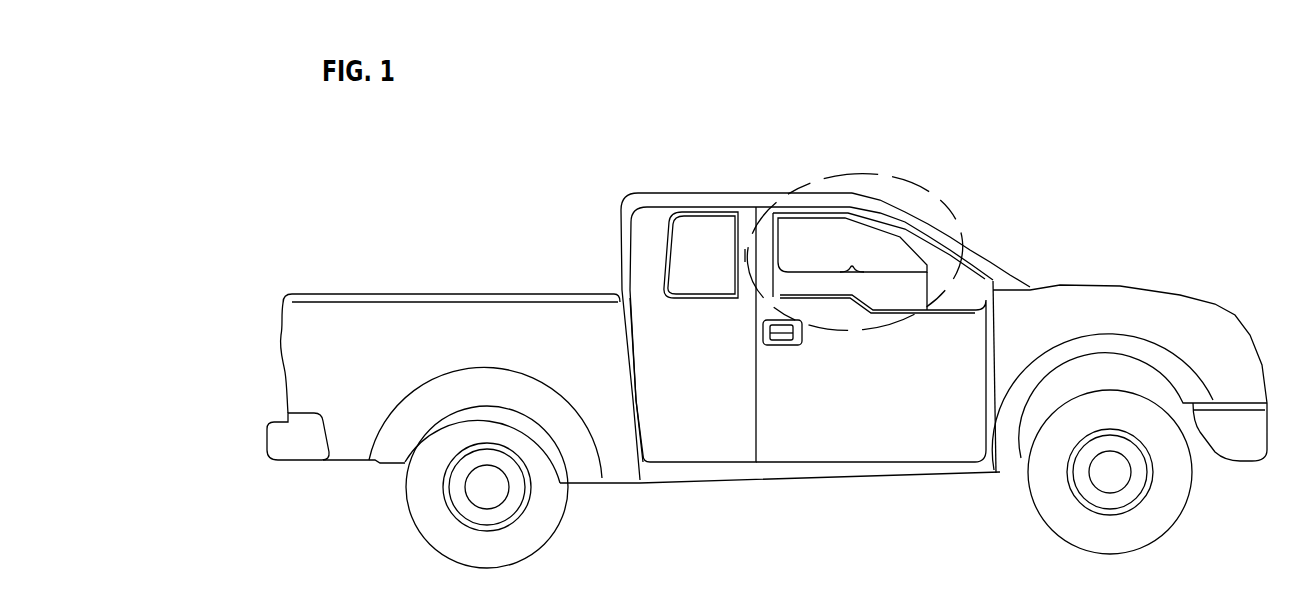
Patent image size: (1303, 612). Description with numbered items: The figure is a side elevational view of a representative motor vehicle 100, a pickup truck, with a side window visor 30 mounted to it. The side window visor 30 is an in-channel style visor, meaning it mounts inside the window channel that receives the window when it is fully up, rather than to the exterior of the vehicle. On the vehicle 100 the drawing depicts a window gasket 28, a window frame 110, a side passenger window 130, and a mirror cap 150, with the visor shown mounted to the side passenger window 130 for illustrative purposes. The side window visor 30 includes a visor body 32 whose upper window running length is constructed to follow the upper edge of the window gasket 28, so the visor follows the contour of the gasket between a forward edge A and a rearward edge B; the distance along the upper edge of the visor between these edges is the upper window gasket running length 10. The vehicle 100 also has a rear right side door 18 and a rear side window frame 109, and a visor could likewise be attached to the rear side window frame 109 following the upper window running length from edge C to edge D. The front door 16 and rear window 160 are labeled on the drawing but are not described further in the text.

The motor vehicle 100 is at (1030, 112).
The upper window gasket running length 10 is at (852, 281).
The front door 16 is at (882, 393).
The rear right side door 18 is at (710, 385).
The window gasket 28 is at (850, 300).
The side window visor 30 is at (842, 207).
The visor body 32 is at (800, 222).
The rear side window frame 109 is at (662, 250).
The window frame 110 is at (765, 240).
The side passenger window 130 is at (817, 257).
The mirror cap 150 is at (957, 296).
The rear window 160 is at (677, 265).
The forward edge A is at (928, 267).
The rearward edge B is at (775, 222).
The edge C is at (733, 215).
The edge D is at (675, 218).